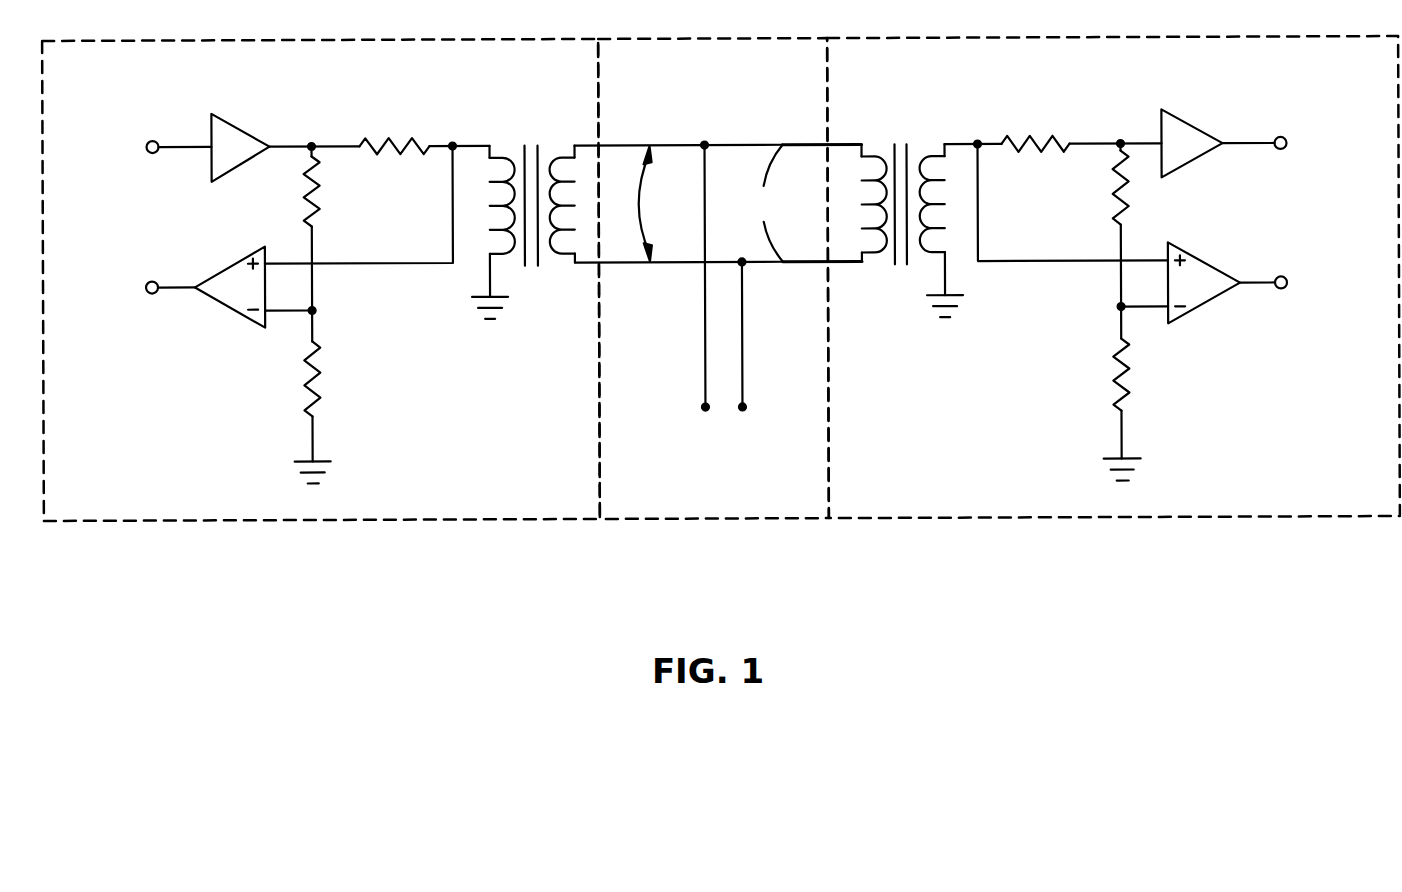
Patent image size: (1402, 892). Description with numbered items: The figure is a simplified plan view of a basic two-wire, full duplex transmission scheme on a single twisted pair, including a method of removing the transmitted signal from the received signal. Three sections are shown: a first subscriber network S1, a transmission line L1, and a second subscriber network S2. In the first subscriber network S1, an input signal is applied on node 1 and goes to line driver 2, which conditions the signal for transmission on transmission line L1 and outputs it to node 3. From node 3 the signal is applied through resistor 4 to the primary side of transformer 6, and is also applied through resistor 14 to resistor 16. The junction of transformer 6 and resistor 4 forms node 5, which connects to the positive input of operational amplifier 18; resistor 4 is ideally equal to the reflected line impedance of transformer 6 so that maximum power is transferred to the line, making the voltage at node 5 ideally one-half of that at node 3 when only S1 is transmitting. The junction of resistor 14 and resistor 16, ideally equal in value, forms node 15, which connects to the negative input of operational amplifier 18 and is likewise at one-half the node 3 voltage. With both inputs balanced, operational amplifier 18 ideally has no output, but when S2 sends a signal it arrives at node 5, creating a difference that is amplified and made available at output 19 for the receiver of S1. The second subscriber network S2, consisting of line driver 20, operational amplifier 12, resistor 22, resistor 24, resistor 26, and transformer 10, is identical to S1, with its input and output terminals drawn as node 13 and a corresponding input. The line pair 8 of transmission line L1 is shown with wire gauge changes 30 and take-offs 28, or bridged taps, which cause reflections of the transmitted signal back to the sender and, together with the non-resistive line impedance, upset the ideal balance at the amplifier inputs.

The node 1 is at (148, 141).
The line driver 2 is at (233, 123).
The node 3 is at (311, 143).
The resistor 4 is at (424, 131).
The node 5 is at (454, 143).
The transformer 6 is at (531, 268).
The transmission line pair 8 is at (679, 204).
The transformer 10 is at (900, 268).
The operational amplifier 12 is at (1195, 252).
The output terminal 13 is at (1288, 280).
The resistor 14 is at (334, 228).
The node 15 is at (315, 308).
The resistor 16 is at (330, 396).
The operational amplifier 18 is at (224, 265).
The output 19 is at (146, 283).
The line driver 20 is at (1190, 122).
The resistor 22 is at (1071, 178).
The resistor 24 is at (1097, 223).
The resistor 26 is at (1100, 393).
The take-offs 28 is at (723, 296).
The wire gauge changes 30 is at (803, 202).
The first subscriber network S1 is at (330, 520).
The transmission line L1 is at (725, 520).
The second subscriber network S2 is at (1122, 518).